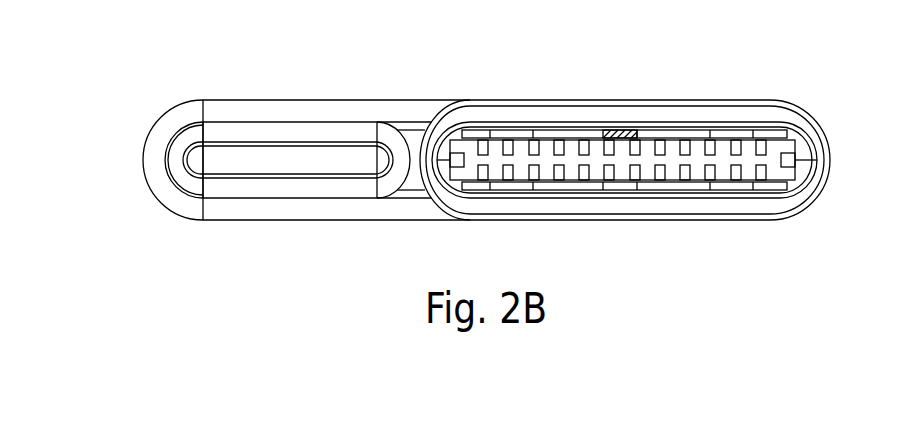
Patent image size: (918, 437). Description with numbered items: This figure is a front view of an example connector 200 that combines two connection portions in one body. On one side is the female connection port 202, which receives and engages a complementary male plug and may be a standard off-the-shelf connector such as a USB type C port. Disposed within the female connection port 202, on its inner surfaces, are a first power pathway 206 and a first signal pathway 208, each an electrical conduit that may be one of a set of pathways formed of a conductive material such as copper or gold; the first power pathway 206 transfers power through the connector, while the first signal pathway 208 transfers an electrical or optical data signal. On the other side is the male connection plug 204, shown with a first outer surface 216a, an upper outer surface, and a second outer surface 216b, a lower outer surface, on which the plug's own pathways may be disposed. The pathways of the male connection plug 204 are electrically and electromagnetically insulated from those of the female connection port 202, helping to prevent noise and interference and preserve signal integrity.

The connector 200 is at (113, 70).
The female connection port 202 is at (804, 232).
The male connection plug 204 is at (268, 250).
The first power pathway 206 is at (603, 143).
The first signal pathway 208 is at (657, 145).
The first outer surface 216a is at (343, 0).
The second outer surface 216b is at (313, 210).